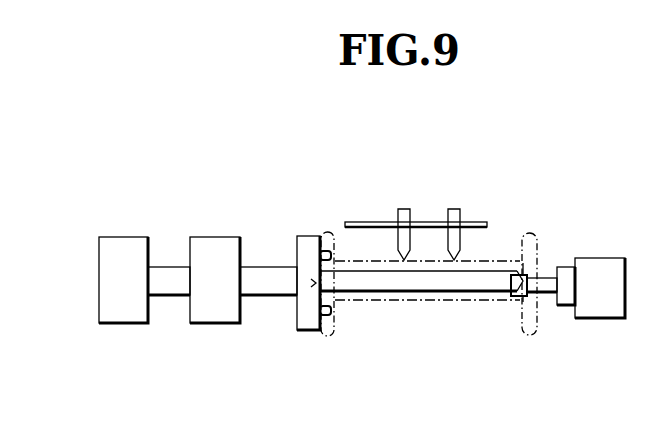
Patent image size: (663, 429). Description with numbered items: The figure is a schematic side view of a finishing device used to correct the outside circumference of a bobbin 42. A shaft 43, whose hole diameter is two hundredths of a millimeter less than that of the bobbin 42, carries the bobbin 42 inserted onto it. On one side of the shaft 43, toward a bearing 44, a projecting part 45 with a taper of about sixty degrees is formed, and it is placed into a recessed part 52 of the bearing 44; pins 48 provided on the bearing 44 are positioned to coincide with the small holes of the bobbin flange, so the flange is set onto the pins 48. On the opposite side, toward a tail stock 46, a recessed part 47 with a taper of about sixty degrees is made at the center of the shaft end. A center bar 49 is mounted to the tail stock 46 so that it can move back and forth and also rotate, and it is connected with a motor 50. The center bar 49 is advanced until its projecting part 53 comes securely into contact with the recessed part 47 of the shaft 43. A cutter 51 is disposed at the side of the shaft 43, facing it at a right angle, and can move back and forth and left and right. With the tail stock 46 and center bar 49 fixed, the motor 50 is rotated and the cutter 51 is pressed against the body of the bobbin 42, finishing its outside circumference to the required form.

The bobbin 42 is at (445, 302).
The shaft 43 is at (385, 286).
The bearing 44 is at (308, 310).
The projecting part 45 is at (314, 283).
The tail stock 46 is at (572, 296).
The recessed part 47 is at (518, 296).
The pins 48 is at (325, 252).
The center bar 49 is at (550, 283).
The motor 50 is at (612, 297).
The cutter 51 is at (404, 218).
The recessed part 52 is at (314, 285).
The projecting part 53 is at (521, 266).